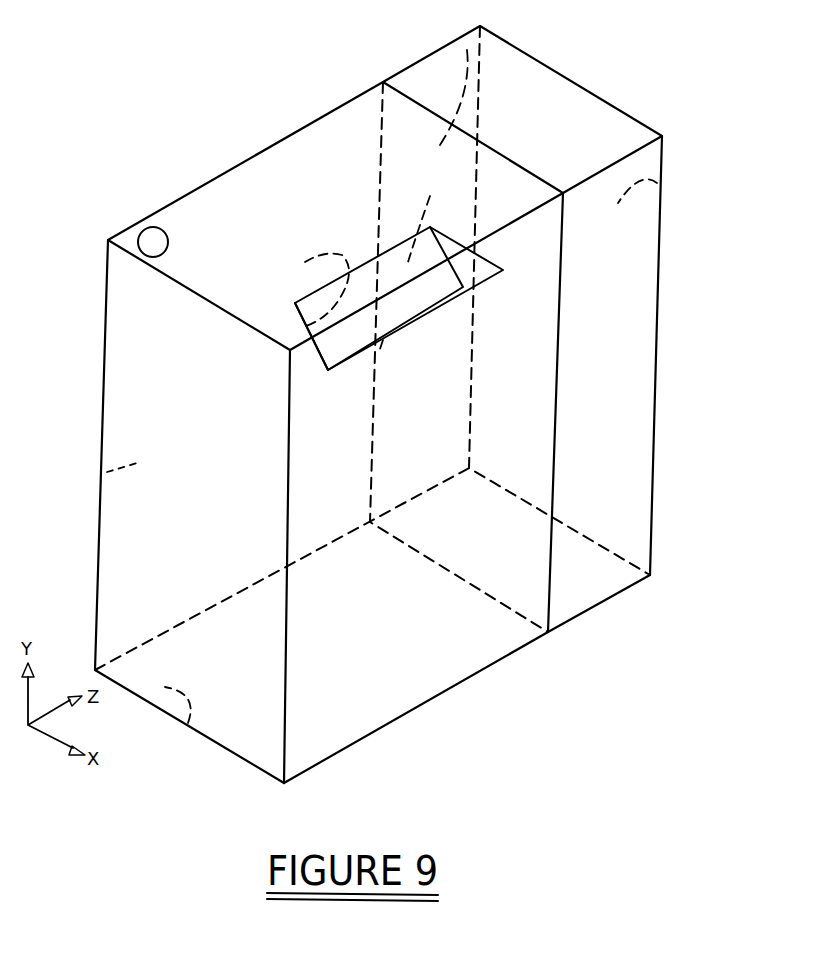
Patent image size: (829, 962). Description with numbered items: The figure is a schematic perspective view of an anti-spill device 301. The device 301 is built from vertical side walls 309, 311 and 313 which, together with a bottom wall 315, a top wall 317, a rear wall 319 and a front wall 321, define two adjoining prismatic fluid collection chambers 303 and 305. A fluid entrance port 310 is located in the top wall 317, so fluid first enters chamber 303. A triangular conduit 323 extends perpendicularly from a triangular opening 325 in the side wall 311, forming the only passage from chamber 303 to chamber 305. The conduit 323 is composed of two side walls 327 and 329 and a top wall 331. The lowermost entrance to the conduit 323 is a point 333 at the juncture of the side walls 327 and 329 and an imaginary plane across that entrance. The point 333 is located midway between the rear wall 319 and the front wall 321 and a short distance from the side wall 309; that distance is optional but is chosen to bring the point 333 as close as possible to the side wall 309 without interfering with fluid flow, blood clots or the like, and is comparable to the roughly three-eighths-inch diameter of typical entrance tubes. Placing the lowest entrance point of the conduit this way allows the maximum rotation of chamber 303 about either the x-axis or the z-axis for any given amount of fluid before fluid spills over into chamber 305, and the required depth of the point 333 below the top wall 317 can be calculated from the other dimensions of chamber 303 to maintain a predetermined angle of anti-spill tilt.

The anti-spill device 301 is at (665, 320).
The fluid collection chamber 303 is at (356, 456).
The fluid collection chamber 305 is at (623, 306).
The vertical side wall 309 is at (168, 345).
The fluid entrance port 310 is at (158, 248).
The vertical side wall 311 is at (467, 50).
The vertical side wall 313 is at (662, 188).
The bottom wall 315 is at (188, 723).
The top wall 317 is at (313, 143).
The rear wall 319 is at (97, 473).
The front wall 321 is at (463, 672).
The triangular conduit 323 is at (367, 256).
The triangular opening 325 is at (480, 267).
The side wall of conduit 327 is at (306, 287).
The side wall of conduit 329 is at (385, 370).
The top wall of conduit 331 is at (428, 218).
The point 333 is at (328, 372).